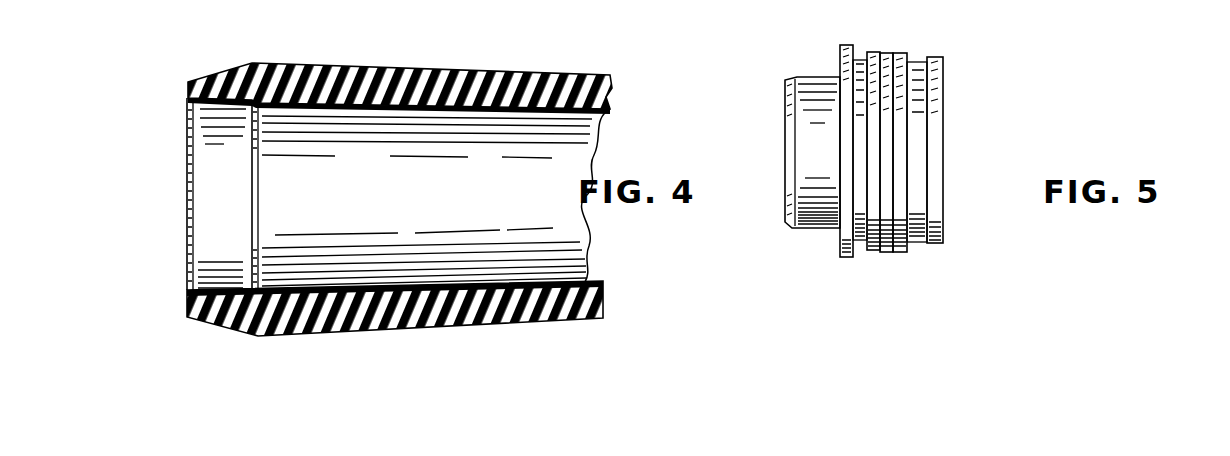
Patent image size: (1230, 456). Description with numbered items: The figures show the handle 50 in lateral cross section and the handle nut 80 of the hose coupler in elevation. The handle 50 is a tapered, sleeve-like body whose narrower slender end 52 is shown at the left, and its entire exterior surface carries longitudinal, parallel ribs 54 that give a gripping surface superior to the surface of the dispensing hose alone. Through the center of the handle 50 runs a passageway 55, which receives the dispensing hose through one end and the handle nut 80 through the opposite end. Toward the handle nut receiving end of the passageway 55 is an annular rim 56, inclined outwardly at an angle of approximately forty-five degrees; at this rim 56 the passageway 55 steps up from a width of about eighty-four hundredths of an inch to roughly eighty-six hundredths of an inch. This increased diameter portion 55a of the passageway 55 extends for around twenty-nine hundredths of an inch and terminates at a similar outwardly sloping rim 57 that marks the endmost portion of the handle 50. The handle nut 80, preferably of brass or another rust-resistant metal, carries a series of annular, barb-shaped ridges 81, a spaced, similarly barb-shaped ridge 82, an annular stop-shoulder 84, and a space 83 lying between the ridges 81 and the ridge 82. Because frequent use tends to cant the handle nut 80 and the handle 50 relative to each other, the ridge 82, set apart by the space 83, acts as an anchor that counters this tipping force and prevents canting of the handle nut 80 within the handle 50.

In FIG. 4, the handle 50 is at (380, 48).
In FIG. 4, the slender end 52 is at (257, 55).
In FIG. 4, the longitudinal, parallel ribs 54 is at (488, 66).
In FIG. 4, the passageway 55 is at (427, 203).
In FIG. 4, the increased diameter portion 55a is at (250, 208).
In FIG. 4, the annular rim 56 is at (260, 230).
In FIG. 4, the outwardly sloping rim 57 is at (190, 290).
In FIG. 5, the handle nut 80 is at (985, 130).
In FIG. 5, the annular, barb-shaped ridges 81 is at (885, 250).
In FIG. 5, the barb-shaped ridge 82 is at (945, 200).
In FIG. 5, the space 83 is at (915, 245).
In FIG. 5, the annular stop-shoulder 84 is at (845, 258).